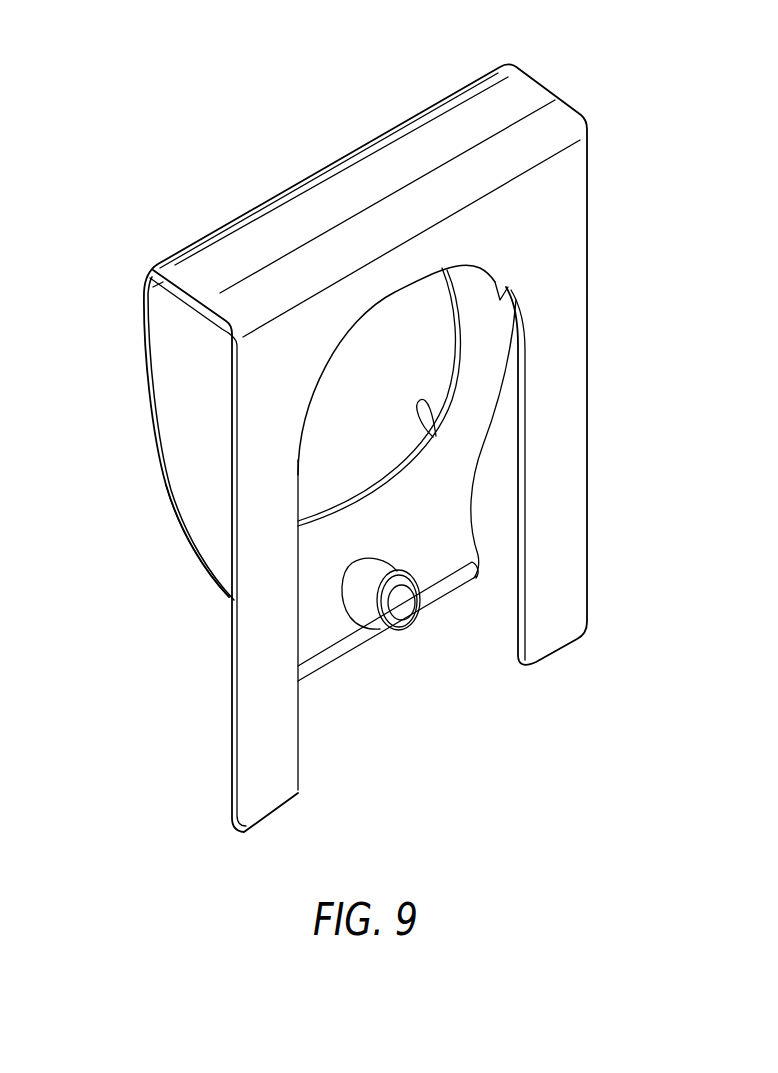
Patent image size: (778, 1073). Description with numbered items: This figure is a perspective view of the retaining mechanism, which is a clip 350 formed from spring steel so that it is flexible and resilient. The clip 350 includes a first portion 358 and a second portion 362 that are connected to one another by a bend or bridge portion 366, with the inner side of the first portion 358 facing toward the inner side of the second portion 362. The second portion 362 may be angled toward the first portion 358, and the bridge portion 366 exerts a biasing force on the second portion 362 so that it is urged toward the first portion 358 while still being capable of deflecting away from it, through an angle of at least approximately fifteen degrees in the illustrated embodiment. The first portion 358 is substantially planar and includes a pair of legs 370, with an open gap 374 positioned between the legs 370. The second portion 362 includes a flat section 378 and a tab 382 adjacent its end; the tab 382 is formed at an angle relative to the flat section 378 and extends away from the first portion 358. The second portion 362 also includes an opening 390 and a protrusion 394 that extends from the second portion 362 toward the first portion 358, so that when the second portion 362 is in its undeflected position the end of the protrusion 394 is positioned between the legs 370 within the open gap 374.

The clip 350 is at (613, 100).
The bridge portion 366 is at (467, 120).
The open gap 374 is at (500, 298).
The first portion 358 is at (613, 337).
The second portion 362 is at (138, 396).
The opening 390 is at (420, 410).
The flat section 378 is at (203, 535).
The legs 370 is at (575, 608).
The protrusion 394 is at (400, 603).
The tab 382 is at (325, 667).